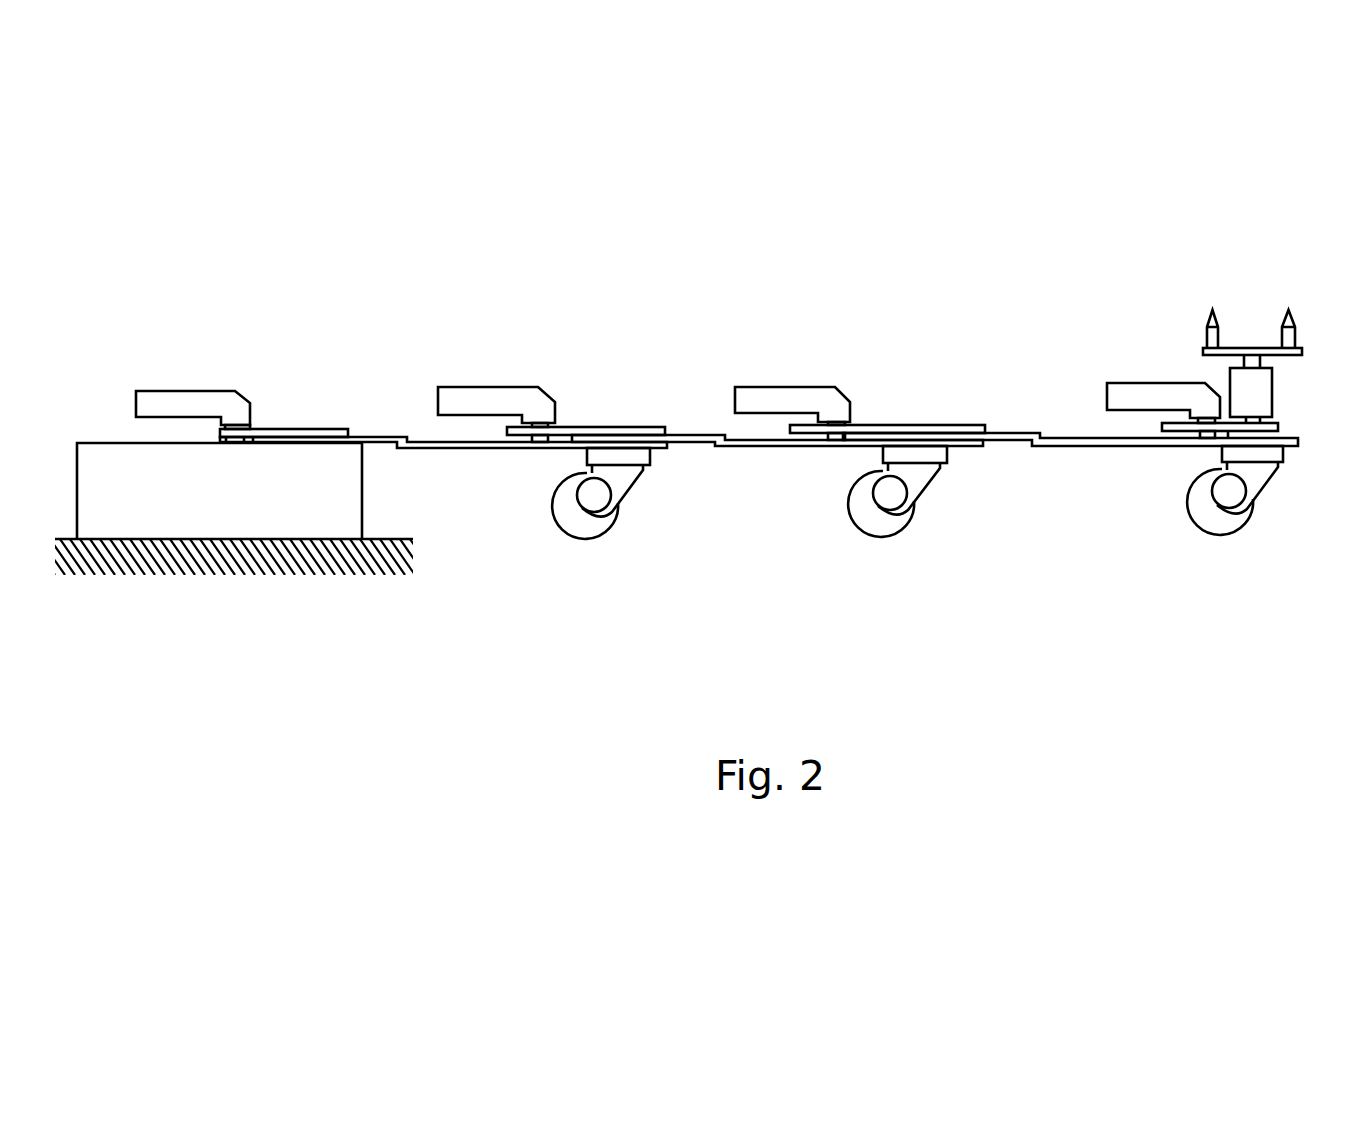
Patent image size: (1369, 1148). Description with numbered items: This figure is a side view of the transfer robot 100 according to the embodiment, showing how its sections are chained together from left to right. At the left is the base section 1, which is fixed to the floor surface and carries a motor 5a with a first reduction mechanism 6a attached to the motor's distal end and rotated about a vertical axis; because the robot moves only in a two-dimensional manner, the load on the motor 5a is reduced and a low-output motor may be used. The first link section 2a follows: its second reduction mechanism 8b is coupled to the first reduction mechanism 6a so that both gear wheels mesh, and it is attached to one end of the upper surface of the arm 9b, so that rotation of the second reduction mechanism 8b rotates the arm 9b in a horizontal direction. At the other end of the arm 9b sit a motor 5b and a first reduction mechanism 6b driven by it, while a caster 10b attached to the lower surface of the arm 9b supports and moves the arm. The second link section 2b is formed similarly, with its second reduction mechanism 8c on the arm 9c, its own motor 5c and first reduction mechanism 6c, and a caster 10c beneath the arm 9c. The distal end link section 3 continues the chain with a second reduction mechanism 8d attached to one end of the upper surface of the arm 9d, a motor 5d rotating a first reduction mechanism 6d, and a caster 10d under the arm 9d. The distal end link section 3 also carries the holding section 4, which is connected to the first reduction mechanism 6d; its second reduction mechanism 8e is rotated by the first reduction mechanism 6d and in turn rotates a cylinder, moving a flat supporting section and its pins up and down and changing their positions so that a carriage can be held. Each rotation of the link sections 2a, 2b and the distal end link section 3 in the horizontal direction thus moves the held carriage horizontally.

The transfer robot 100 is at (1047, 249).
The base section 1 is at (92, 467).
The link section 2a is at (557, 450).
The link section 2b is at (860, 465).
The distal end link section 3 is at (1212, 424).
The holding section 4 is at (1245, 322).
The motor 5a is at (187, 398).
The motor 5b is at (492, 393).
The motor 5c is at (787, 397).
The motor 5d is at (1130, 390).
The first reduction mechanism 6a is at (243, 443).
The first reduction mechanism 6b is at (535, 437).
The first reduction mechanism 6c is at (880, 425).
The first reduction mechanism 6d is at (1168, 438).
The second reduction mechanism 8b is at (328, 433).
The second reduction mechanism 8c is at (625, 427).
The second reduction mechanism 8d is at (958, 423).
The second reduction mechanism 8e is at (1280, 425).
The arm 9b is at (445, 448).
The arm 9c is at (732, 453).
The arm 9d is at (1040, 450).
The caster 10b is at (602, 528).
The caster 10c is at (878, 525).
The caster 10d is at (1217, 523).